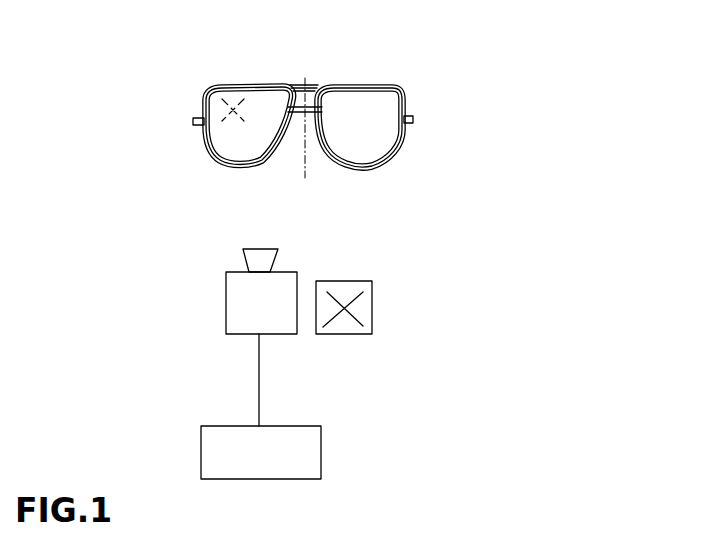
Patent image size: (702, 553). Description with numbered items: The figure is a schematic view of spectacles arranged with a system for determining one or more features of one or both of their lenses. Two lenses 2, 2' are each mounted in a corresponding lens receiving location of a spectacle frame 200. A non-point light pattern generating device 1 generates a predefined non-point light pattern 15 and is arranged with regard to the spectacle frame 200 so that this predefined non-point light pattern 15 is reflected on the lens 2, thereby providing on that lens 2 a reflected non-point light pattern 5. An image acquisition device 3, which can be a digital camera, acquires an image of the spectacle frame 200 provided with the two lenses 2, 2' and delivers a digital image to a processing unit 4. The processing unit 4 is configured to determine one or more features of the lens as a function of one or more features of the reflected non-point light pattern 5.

The spectacle frame 200 is at (337, 120).
The lens 2 is at (255, 145).
The lens 2' is at (376, 146).
The reflected non-point light pattern 5 is at (232, 126).
The non-point light pattern generating device 1 is at (304, 364).
The image acquisition device 3 is at (238, 302).
The predefined non-point light pattern 15 is at (360, 299).
The processing unit 4 is at (305, 444).